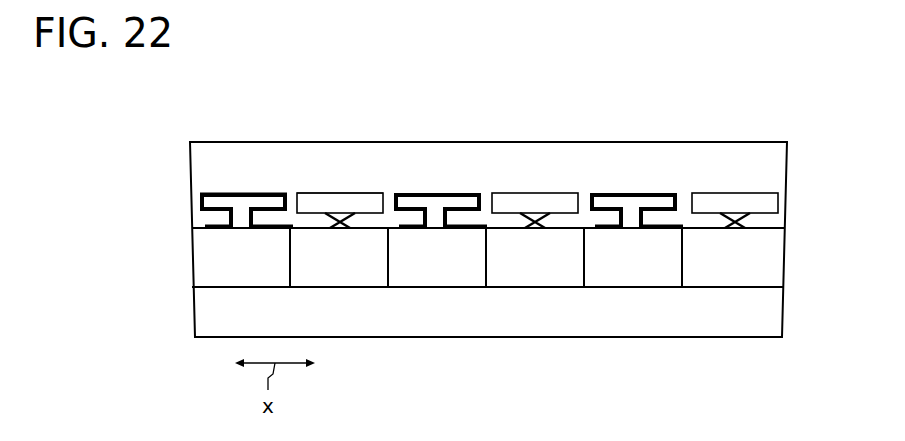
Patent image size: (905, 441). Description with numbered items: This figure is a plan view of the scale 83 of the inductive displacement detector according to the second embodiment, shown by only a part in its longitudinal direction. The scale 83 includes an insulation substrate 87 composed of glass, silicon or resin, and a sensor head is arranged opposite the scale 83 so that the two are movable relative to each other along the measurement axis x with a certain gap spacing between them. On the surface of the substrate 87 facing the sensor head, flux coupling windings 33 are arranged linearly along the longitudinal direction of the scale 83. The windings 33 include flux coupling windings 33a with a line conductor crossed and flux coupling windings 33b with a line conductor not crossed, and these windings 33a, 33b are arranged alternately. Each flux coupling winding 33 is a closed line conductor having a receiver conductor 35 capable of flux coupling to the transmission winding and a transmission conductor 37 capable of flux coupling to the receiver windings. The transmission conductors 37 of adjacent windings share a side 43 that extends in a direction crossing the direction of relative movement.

The flux coupling winding 33 is at (489, 157).
The flux coupling winding with line conductor crossed 33a is at (353, 240).
The flux coupling winding with line conductor not crossed 33b is at (240, 240).
The receiver conductor 35 is at (215, 181).
The transmission conductor 37 is at (218, 297).
The side 43 is at (292, 263).
The scale 83 is at (768, 78).
The insulation substrate 87 is at (782, 303).